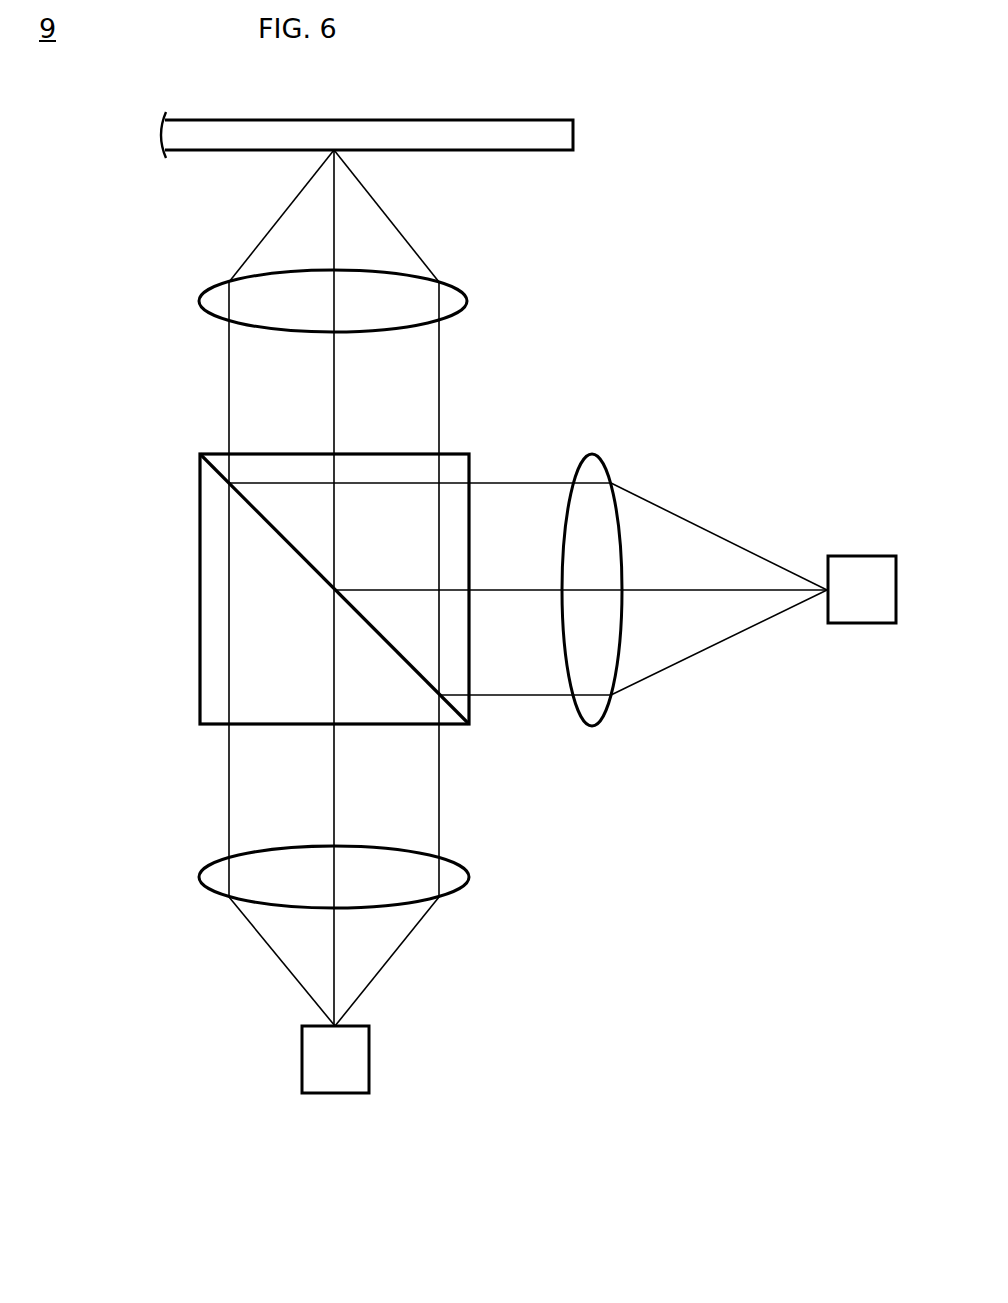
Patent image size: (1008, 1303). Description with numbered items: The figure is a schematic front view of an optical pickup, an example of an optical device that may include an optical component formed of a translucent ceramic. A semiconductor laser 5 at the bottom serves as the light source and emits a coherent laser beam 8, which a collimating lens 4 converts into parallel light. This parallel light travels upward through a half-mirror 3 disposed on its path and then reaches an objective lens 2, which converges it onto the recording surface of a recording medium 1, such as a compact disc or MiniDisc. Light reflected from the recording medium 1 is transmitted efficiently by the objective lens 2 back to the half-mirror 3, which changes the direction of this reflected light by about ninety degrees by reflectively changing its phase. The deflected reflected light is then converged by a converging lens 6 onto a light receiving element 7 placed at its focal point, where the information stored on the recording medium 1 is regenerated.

The recording medium 1 is at (565, 136).
The objective lens 2 is at (460, 302).
The half-mirror 3 is at (216, 581).
The collimating lens 4 is at (463, 873).
The semiconductor laser 5 is at (363, 1064).
The converging lens 6 is at (588, 456).
The light receiving element 7 is at (862, 558).
The laser beam 8 is at (230, 787).